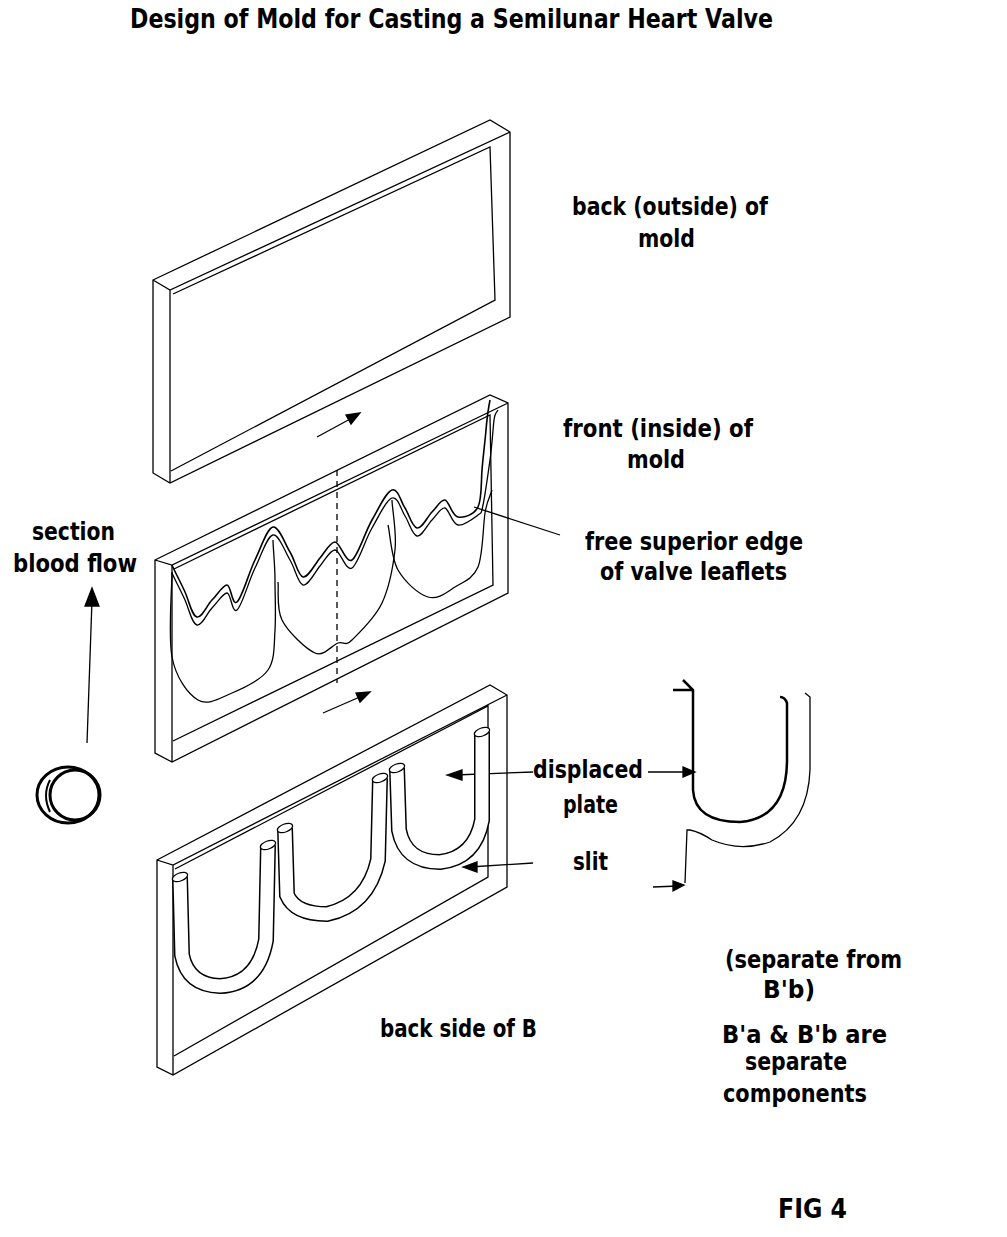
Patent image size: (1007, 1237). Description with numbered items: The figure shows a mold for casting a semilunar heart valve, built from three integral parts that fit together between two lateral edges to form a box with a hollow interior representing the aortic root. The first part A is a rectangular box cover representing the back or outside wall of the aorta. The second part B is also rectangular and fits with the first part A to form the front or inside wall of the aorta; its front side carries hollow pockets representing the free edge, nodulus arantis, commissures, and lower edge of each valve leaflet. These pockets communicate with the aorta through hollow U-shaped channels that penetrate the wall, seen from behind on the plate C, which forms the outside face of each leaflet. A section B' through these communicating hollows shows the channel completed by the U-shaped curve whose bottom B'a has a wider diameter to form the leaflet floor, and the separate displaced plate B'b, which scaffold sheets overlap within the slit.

In FIG. 4A, the first part A is at (313, 301).
In FIG. 4B, the second part B is at (310, 578).
In FIG. 4C, the plate C is at (311, 880).
In FIG. 4, the communicating hollows B' is at (780, 781).
In FIG. 4A, the communicating hollows B' is at (360, 416).
In FIG. 4B, the communicating hollows B' is at (366, 690).
In FIG. 4, the bottom of the U-shaped curve B'a is at (760, 822).
In FIG. 4, the displaced plate B'b is at (765, 710).